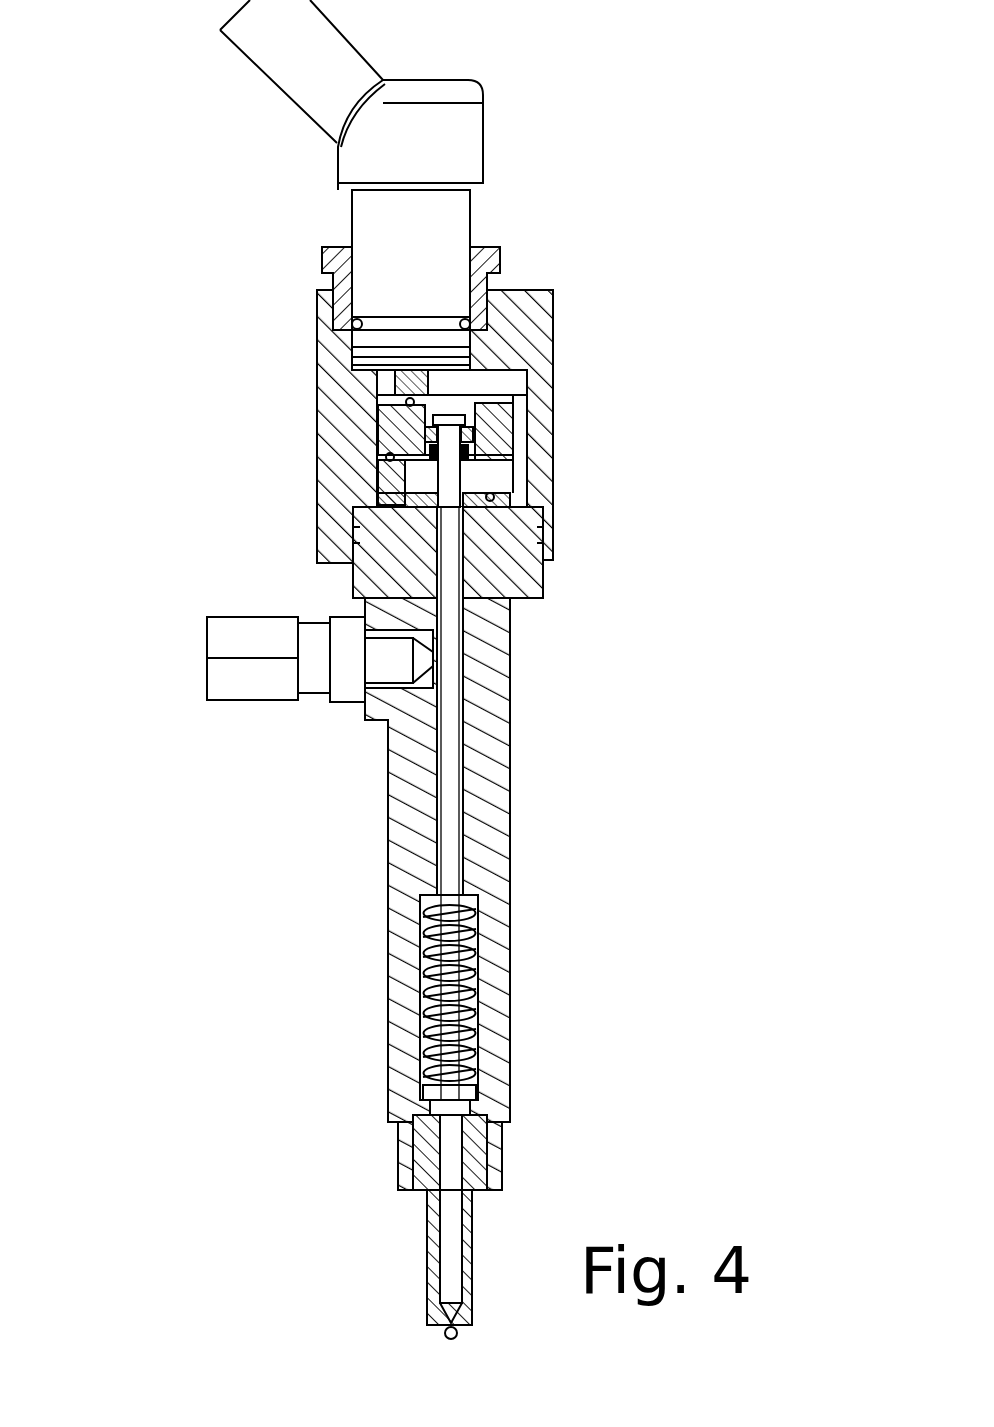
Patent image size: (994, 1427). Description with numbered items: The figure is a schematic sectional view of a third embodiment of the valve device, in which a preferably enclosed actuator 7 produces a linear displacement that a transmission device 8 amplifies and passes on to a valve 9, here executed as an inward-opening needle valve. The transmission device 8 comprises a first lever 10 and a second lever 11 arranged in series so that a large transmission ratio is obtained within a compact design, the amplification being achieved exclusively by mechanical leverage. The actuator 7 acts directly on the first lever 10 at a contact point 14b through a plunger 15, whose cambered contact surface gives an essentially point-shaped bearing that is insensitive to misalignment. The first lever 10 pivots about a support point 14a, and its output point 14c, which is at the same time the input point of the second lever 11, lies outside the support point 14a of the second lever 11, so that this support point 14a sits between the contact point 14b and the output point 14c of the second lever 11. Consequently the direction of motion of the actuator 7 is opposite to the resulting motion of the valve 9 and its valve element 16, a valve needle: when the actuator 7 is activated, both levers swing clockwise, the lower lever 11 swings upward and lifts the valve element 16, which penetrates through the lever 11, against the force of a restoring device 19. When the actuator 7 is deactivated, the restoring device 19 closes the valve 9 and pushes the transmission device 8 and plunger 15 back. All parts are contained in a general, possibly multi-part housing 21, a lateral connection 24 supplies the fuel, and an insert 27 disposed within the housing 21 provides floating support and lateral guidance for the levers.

The actuator 7 is at (387, 223).
The transmission device 8 is at (480, 400).
The valve 9 is at (436, 1249).
The first lever 10 is at (512, 405).
The second lever 11 is at (523, 460).
The support point 14a is at (385, 450).
The contact point 14b is at (387, 394).
The output point 14c is at (520, 438).
The plunger 15 is at (410, 378).
The valve element 16 is at (450, 740).
The restoring device 19 is at (467, 933).
The housing 21 is at (535, 376).
The lateral connection 24 is at (275, 683).
The insert 27 is at (390, 485).